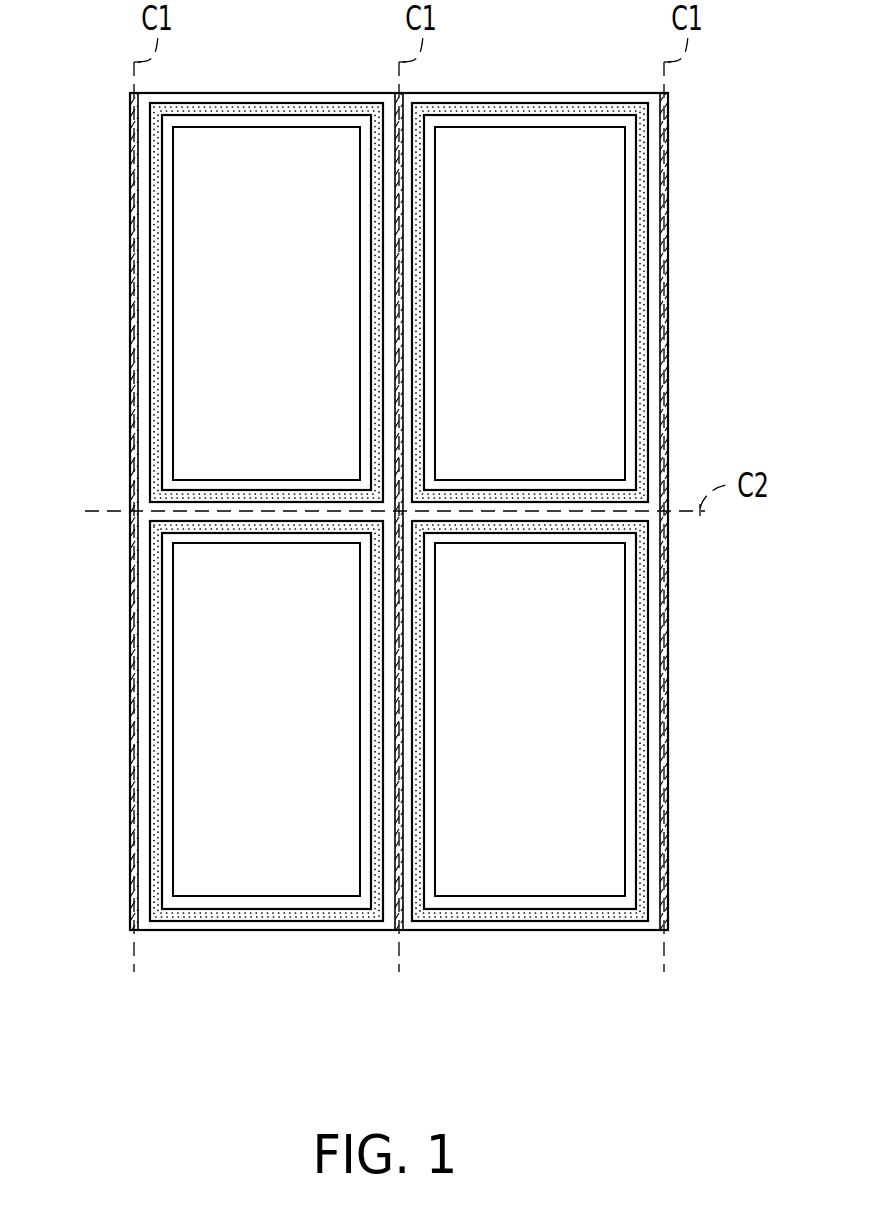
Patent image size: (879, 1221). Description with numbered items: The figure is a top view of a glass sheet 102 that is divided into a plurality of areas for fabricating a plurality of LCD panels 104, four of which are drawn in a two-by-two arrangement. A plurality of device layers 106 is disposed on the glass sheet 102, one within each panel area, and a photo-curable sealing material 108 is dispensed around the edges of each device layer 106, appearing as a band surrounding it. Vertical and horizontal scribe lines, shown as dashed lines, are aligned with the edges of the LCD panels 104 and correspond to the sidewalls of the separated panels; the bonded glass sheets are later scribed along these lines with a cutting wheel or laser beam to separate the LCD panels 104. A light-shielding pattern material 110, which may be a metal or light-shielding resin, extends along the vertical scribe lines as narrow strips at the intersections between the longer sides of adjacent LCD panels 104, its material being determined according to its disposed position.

The glass sheet 102 is at (590, 931).
The LCD panel 104 is at (458, 473).
The device layer 106 is at (590, 270).
The photo-curable sealing material 108 is at (646, 215).
The light-shielding pattern material 110 is at (131, 97).